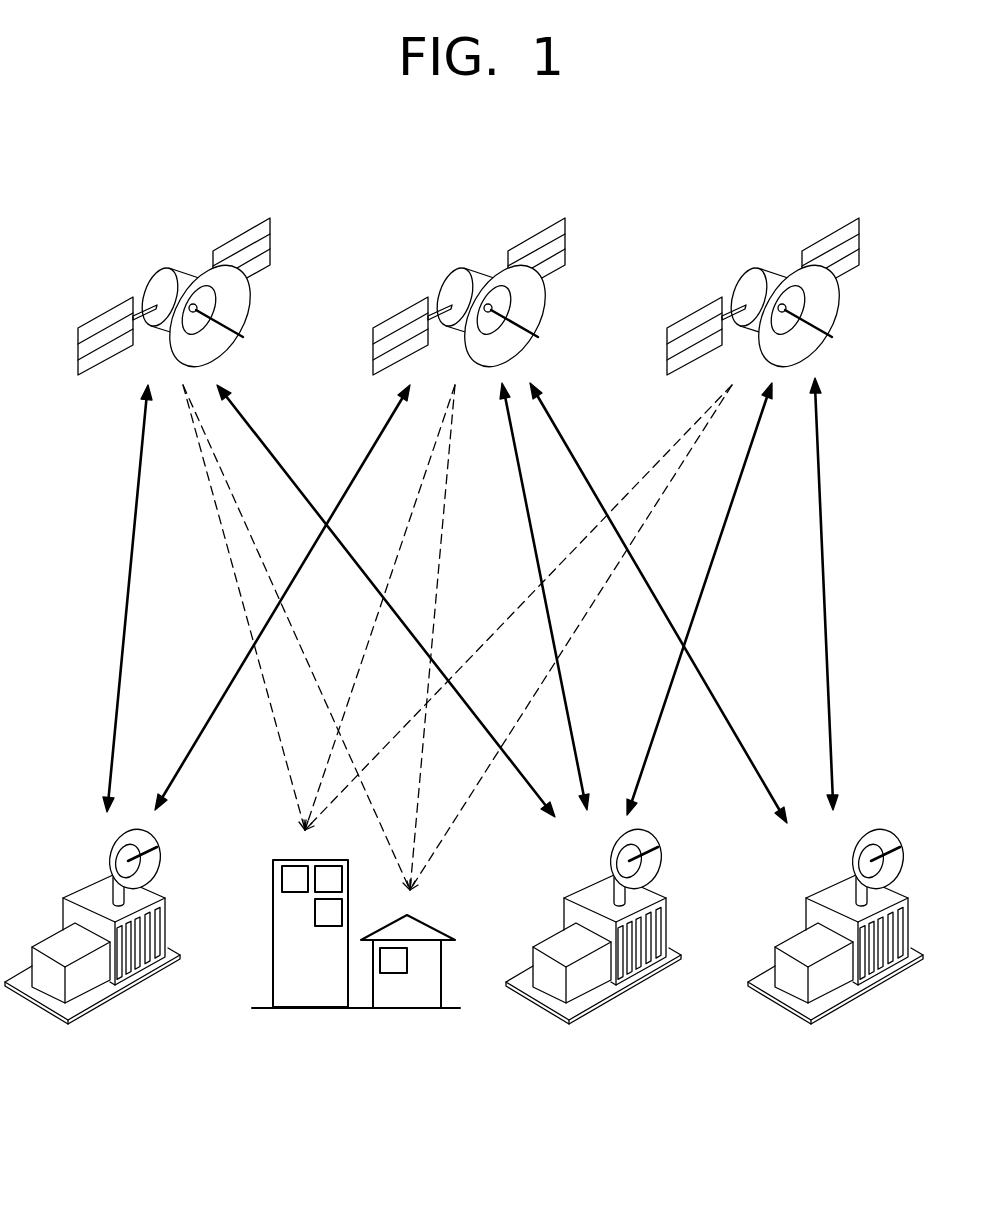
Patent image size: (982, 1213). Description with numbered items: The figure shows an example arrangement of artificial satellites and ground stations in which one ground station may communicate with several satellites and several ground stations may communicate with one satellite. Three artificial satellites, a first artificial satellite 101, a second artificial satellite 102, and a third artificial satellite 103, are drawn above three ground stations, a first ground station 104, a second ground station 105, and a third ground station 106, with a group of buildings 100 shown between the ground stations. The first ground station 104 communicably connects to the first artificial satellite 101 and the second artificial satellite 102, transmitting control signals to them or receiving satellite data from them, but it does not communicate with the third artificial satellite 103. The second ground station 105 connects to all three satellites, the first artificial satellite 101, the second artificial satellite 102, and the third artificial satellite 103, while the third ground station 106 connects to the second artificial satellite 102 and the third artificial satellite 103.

The terrestrial area / user buildings 100 is at (362, 1010).
The first artificial satellite 101 is at (158, 261).
The second artificial satellite 102 is at (453, 261).
The third artificial satellite 103 is at (747, 261).
The first ground station 104 is at (125, 997).
The second ground station 105 is at (626, 997).
The third ground station 106 is at (868, 997).